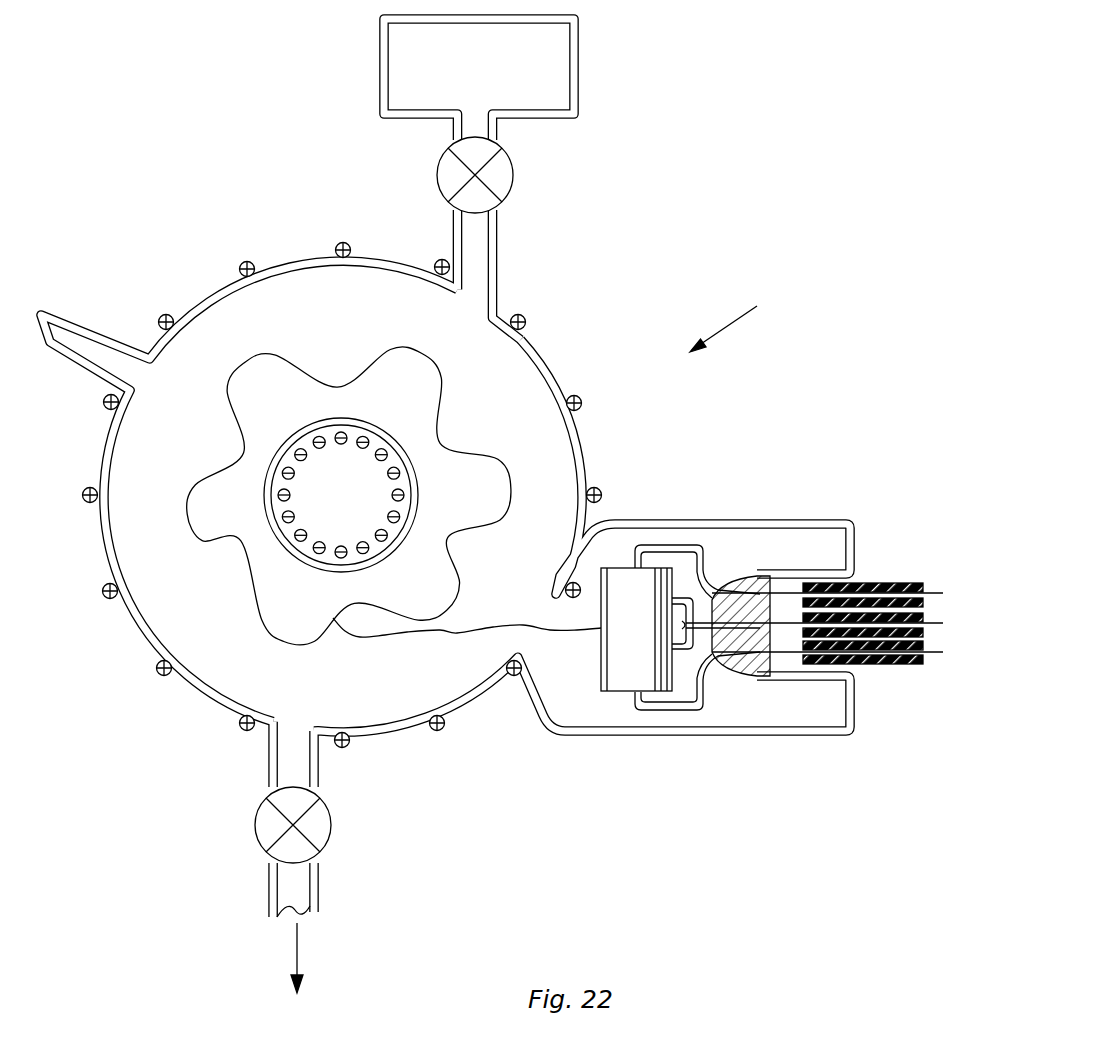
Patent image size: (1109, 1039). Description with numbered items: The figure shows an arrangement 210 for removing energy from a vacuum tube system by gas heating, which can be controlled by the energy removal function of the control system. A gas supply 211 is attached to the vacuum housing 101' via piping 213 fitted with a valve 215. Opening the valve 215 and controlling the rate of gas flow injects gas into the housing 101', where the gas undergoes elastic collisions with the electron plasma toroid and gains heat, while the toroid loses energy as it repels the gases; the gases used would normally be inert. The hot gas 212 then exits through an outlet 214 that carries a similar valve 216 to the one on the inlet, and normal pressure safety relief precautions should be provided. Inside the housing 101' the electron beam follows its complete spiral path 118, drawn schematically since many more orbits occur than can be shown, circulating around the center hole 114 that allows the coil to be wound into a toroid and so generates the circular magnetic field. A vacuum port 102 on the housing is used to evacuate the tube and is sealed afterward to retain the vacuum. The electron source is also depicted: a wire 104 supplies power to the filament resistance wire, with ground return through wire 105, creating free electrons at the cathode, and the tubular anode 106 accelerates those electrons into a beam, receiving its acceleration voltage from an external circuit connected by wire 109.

The gas supply 211 is at (580, 80).
The valve 215 is at (512, 178).
The piping 213 is at (498, 258).
The vacuum port 102 is at (101, 326).
The vacuum housing 101' is at (342, 500).
The electron beam spiral path 118 is at (300, 640).
The center hole 114 is at (362, 511).
The wire 104 is at (688, 545).
The wire 105 is at (700, 712).
The anode 106 is at (598, 648).
The wire 109 is at (775, 628).
The valve 216 is at (332, 830).
The outlet 214 is at (305, 908).
The hot gas 212 is at (295, 948).
The arrangement 210 is at (749, 319).